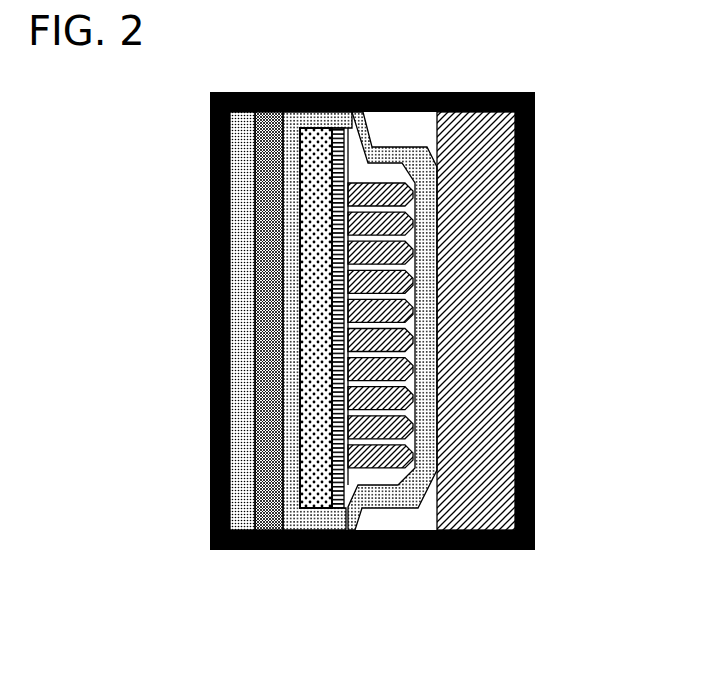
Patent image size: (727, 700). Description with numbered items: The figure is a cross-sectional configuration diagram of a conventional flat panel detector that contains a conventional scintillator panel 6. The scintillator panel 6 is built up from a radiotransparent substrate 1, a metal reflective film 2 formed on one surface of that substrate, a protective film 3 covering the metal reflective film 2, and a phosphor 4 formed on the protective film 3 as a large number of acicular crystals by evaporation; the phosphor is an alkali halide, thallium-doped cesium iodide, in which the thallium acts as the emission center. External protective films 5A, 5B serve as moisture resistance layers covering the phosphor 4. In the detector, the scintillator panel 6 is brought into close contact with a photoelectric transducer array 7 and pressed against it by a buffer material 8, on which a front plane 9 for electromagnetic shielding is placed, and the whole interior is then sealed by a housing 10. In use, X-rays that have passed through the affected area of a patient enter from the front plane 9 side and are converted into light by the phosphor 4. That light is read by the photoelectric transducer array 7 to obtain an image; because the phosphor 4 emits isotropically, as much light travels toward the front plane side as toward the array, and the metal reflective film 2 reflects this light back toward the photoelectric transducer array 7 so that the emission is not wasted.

The radiotransparent substrate 1 is at (315, 503).
The metal reflective film 2 is at (340, 495).
The protective film 3 is at (392, 530).
The phosphor 4 is at (420, 488).
The external protective film 5A is at (421, 490).
The external protective film 5B is at (291, 527).
The scintillator panel 6 is at (493, 610).
The photoelectric transducer array 7 is at (535, 263).
The buffer material 8 is at (268, 93).
The front plane 9 is at (242, 93).
The housing 10 is at (503, 93).